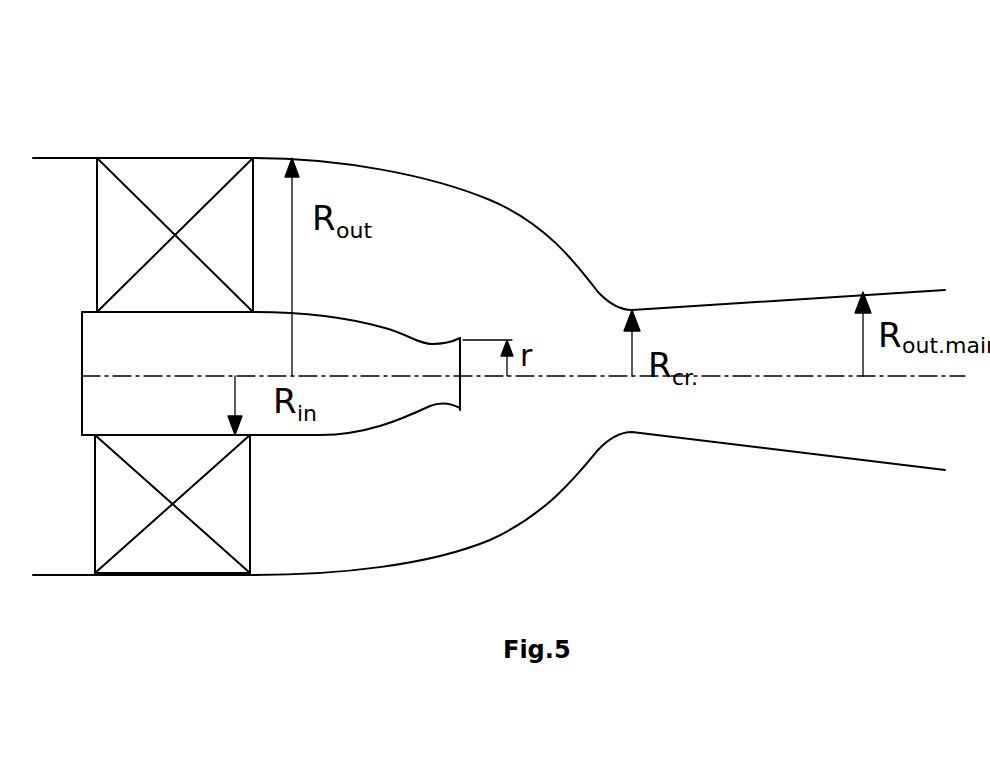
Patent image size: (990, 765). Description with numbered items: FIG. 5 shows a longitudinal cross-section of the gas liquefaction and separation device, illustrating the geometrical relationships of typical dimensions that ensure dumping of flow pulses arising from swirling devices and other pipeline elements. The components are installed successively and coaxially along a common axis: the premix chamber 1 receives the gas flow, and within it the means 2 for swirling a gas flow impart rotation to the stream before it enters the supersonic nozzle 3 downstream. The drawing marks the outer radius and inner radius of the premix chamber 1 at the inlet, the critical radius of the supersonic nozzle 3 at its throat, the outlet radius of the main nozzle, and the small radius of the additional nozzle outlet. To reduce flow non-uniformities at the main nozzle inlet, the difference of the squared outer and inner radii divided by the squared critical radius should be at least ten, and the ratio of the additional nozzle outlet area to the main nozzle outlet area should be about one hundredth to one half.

The premix chamber 1 is at (52, 217).
The means for swirling a gas flow 2 is at (173, 200).
The supersonic nozzle 3 is at (350, 350).